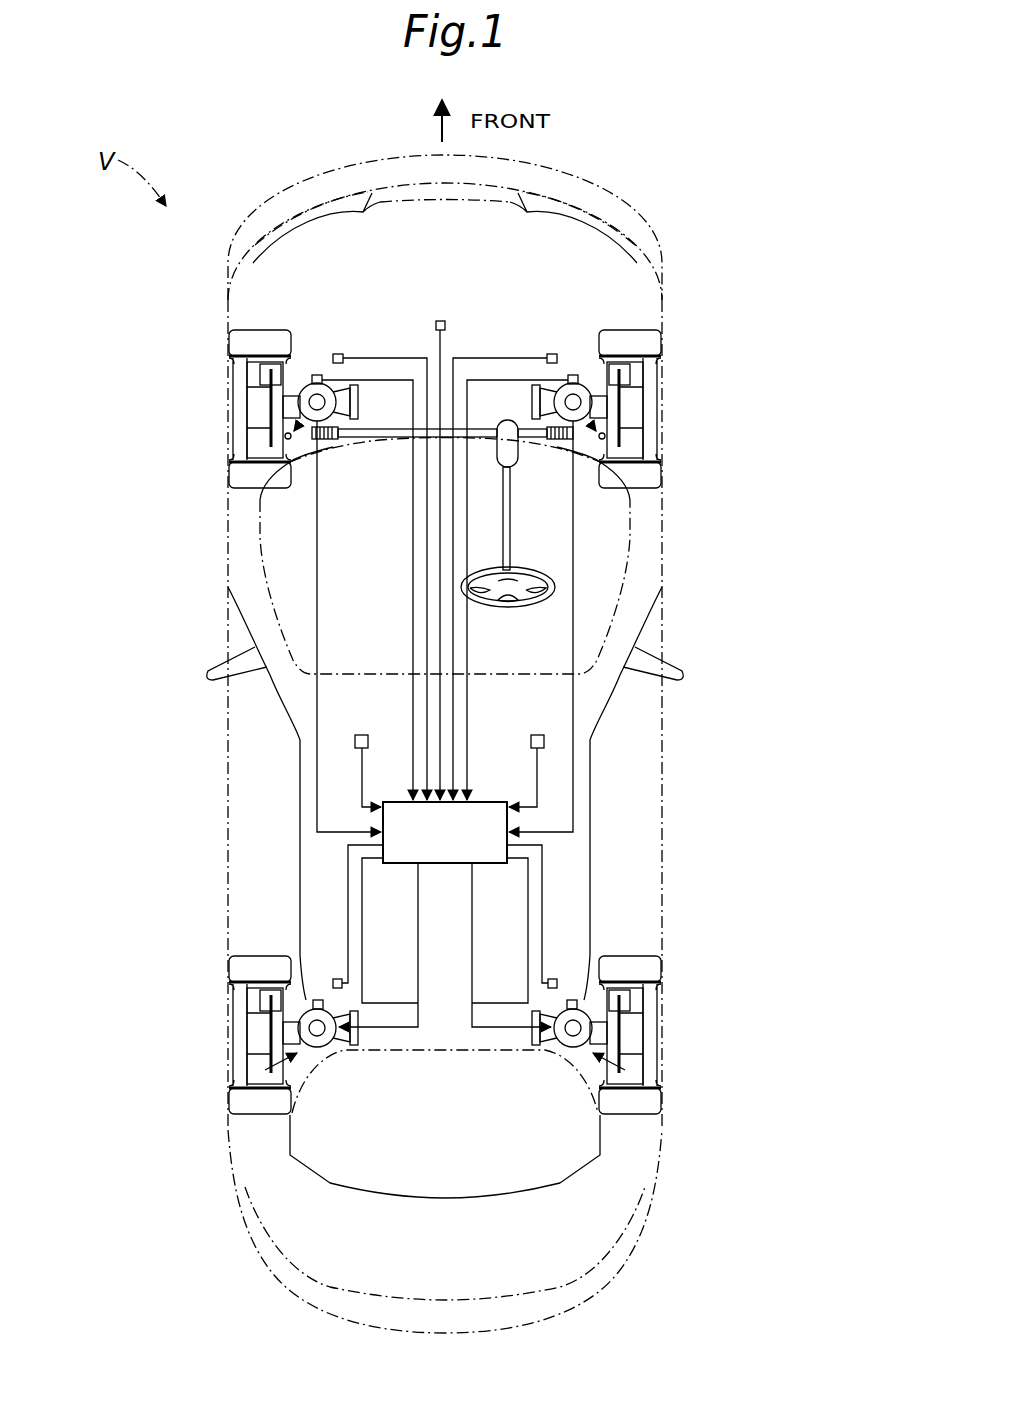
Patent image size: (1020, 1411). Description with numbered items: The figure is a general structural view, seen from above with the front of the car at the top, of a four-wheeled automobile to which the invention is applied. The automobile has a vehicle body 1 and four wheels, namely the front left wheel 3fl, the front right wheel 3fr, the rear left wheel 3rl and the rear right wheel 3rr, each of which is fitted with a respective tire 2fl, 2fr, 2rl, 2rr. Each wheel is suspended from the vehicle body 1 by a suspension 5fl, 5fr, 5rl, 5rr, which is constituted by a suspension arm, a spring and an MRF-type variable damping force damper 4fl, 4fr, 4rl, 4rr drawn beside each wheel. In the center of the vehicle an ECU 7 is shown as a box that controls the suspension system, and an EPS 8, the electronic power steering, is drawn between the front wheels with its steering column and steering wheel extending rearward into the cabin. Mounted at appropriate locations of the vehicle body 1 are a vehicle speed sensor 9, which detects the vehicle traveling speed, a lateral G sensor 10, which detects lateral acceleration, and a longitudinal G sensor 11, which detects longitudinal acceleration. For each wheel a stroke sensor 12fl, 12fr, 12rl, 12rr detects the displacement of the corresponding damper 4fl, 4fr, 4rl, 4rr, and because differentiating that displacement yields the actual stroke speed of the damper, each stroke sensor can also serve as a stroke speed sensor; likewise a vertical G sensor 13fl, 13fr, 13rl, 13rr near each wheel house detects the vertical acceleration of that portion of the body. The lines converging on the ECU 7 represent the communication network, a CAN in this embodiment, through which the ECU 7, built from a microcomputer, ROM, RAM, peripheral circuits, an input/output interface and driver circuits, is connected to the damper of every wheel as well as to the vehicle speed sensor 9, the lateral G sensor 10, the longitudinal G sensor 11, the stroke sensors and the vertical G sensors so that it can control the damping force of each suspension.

The vehicle body 1 is at (662, 280).
The tire (front left) 2fl is at (240, 483).
The tire (front right) 2fr is at (650, 483).
The tire (rear left) 2rl is at (240, 1108).
The tire (rear right) 2rr is at (650, 1108).
The front left wheel 3fl is at (237, 372).
The front right wheel 3fr is at (653, 372).
The rear left wheel 3rl is at (237, 998).
The rear right wheel 3rr is at (653, 998).
The MRF-type variable damping force damper (front left) 4fl is at (285, 404).
The MRF-type variable damping force damper (front right) 4fr is at (605, 404).
The MRF-type variable damping force damper (rear left) 4rl is at (285, 1029).
The MRF-type variable damping force damper (rear right) 4rr is at (605, 1029).
The suspension (front left) 5fl is at (250, 447).
The suspension (front right) 5fr is at (640, 448).
The suspension (rear left) 5rl is at (265, 1070).
The suspension (rear right) 5rr is at (625, 1070).
The ECU 7 is at (484, 806).
The EPS 8 is at (483, 402).
The vehicle speed sensor 9 is at (439, 320).
The lateral G sensor 10 is at (362, 735).
The longitudinal G sensor 11 is at (537, 735).
The stroke sensor (front left) 12fl is at (314, 374).
The stroke sensor (front right) 12fr is at (576, 374).
The stroke sensor (rear left) 12rl is at (317, 999).
The stroke sensor (rear right) 12rr is at (573, 999).
The vertical G sensor (front left) 13fl is at (338, 353).
The vertical G sensor (front right) 13fr is at (552, 353).
The vertical G sensor (rear left) 13rl is at (336, 978).
The vertical G sensor (rear right) 13rr is at (554, 978).